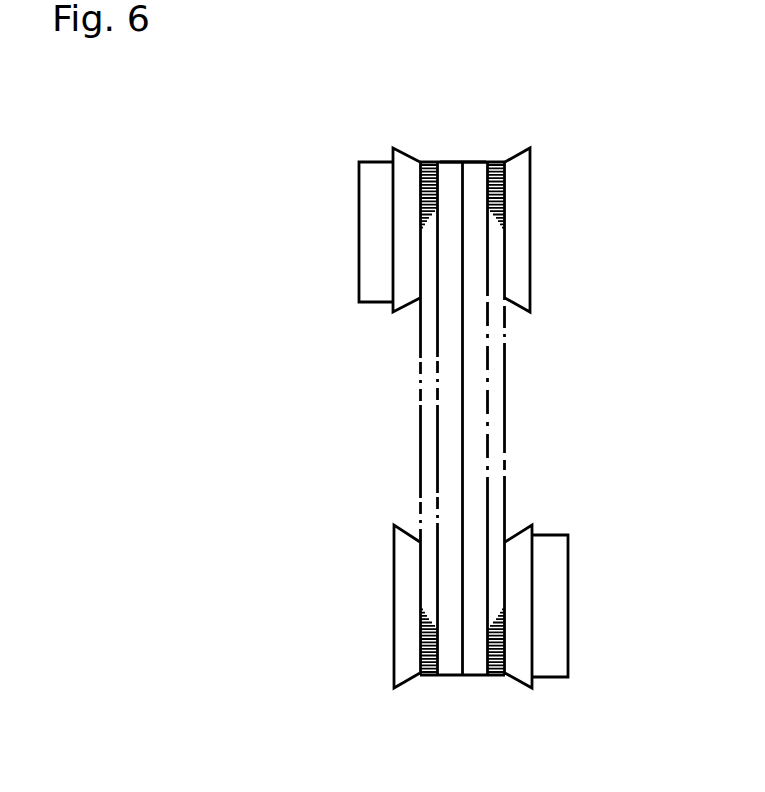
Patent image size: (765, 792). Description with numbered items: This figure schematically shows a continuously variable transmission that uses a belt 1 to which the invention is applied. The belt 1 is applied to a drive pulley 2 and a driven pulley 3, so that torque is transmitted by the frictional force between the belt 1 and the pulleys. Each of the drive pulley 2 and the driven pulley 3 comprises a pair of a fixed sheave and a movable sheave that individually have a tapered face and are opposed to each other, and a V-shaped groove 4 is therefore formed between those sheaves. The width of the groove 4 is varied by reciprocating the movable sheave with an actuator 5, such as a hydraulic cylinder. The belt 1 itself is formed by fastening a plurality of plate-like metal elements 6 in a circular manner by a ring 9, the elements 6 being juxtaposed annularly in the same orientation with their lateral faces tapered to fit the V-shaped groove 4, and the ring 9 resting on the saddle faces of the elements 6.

The belt 1 is at (519, 425).
The drive pulley 2 is at (507, 196).
The driven pulley 3 is at (391, 697).
The V-shaped groove 4 is at (410, 305).
The actuator 5 is at (362, 207).
The element 6 is at (497, 163).
The ring 9 is at (475, 167).